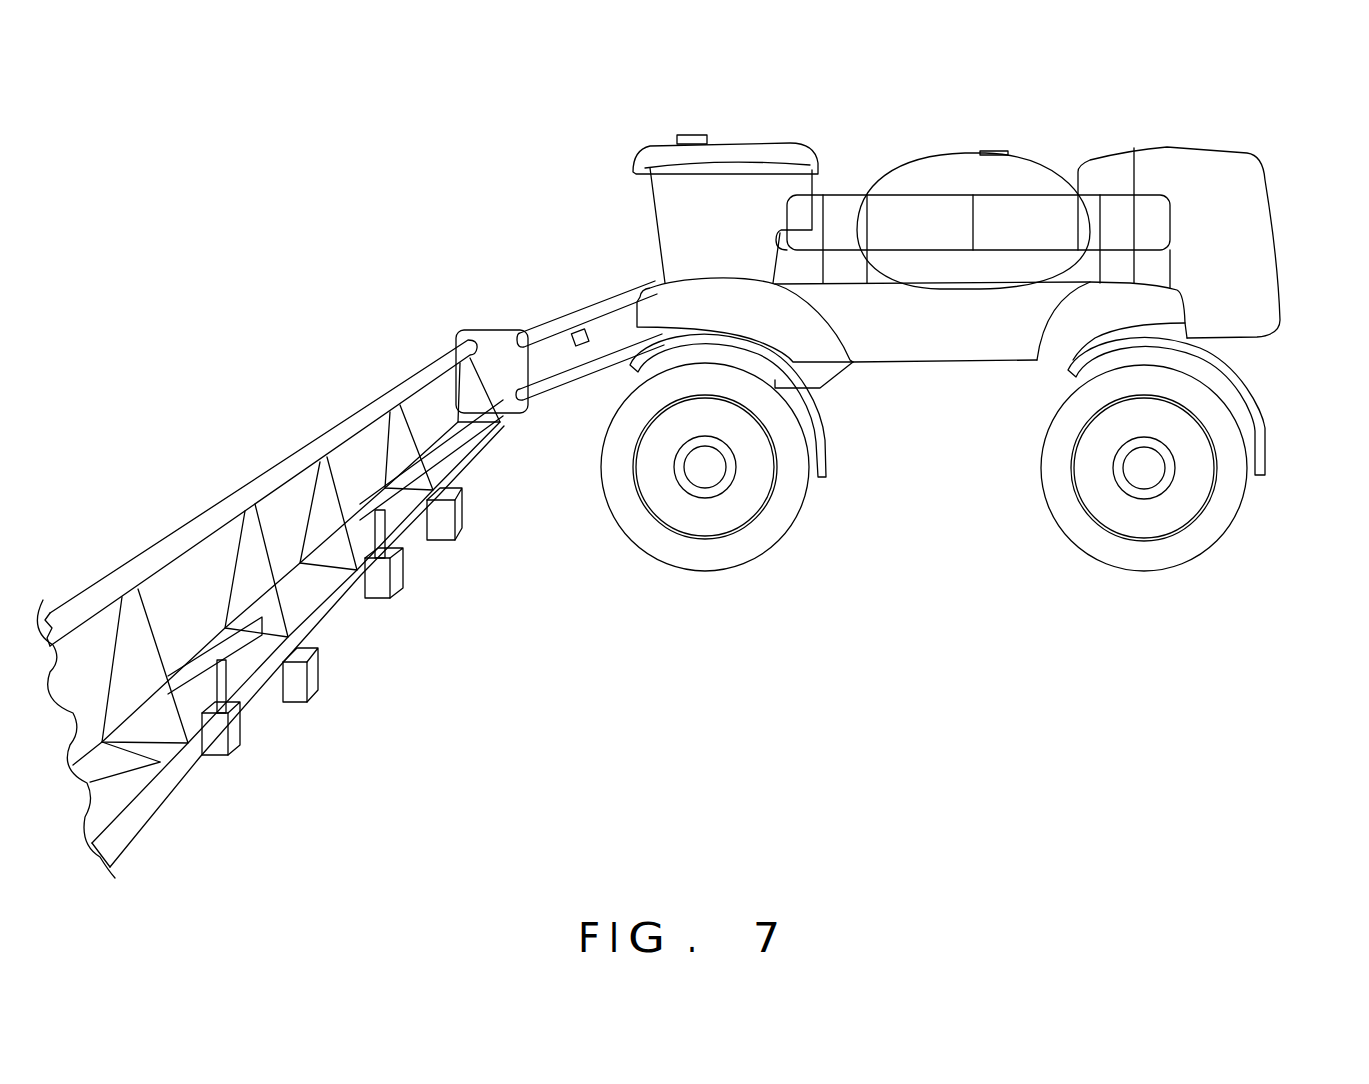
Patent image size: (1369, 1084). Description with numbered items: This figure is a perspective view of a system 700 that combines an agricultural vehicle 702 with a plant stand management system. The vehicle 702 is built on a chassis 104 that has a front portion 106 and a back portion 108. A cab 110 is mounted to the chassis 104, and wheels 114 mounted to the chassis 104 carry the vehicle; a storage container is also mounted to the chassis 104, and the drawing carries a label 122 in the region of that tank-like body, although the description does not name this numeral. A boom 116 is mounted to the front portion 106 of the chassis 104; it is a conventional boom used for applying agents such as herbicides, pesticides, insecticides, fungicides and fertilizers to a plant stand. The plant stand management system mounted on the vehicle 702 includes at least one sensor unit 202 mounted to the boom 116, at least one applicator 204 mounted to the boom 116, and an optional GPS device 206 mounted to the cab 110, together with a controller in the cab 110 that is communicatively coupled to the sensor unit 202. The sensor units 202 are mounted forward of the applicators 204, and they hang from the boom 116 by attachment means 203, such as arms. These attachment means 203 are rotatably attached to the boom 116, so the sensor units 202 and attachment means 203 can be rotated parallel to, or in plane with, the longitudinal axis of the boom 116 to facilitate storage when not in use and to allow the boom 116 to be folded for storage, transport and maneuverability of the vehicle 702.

The system 700 is at (582, 122).
The agricultural vehicle 702 is at (840, 132).
The chassis 104 is at (910, 347).
The front portion 106 is at (622, 217).
The back portion 108 is at (1285, 168).
The cab 110 is at (743, 140).
The GPS device 206 is at (693, 135).
The product tank 122 is at (970, 163).
The wheels 114 is at (778, 508).
The boom 116 is at (352, 417).
The sensor unit 202 is at (377, 590).
The attachment means 203 is at (380, 534).
The applicator 204 is at (458, 527).